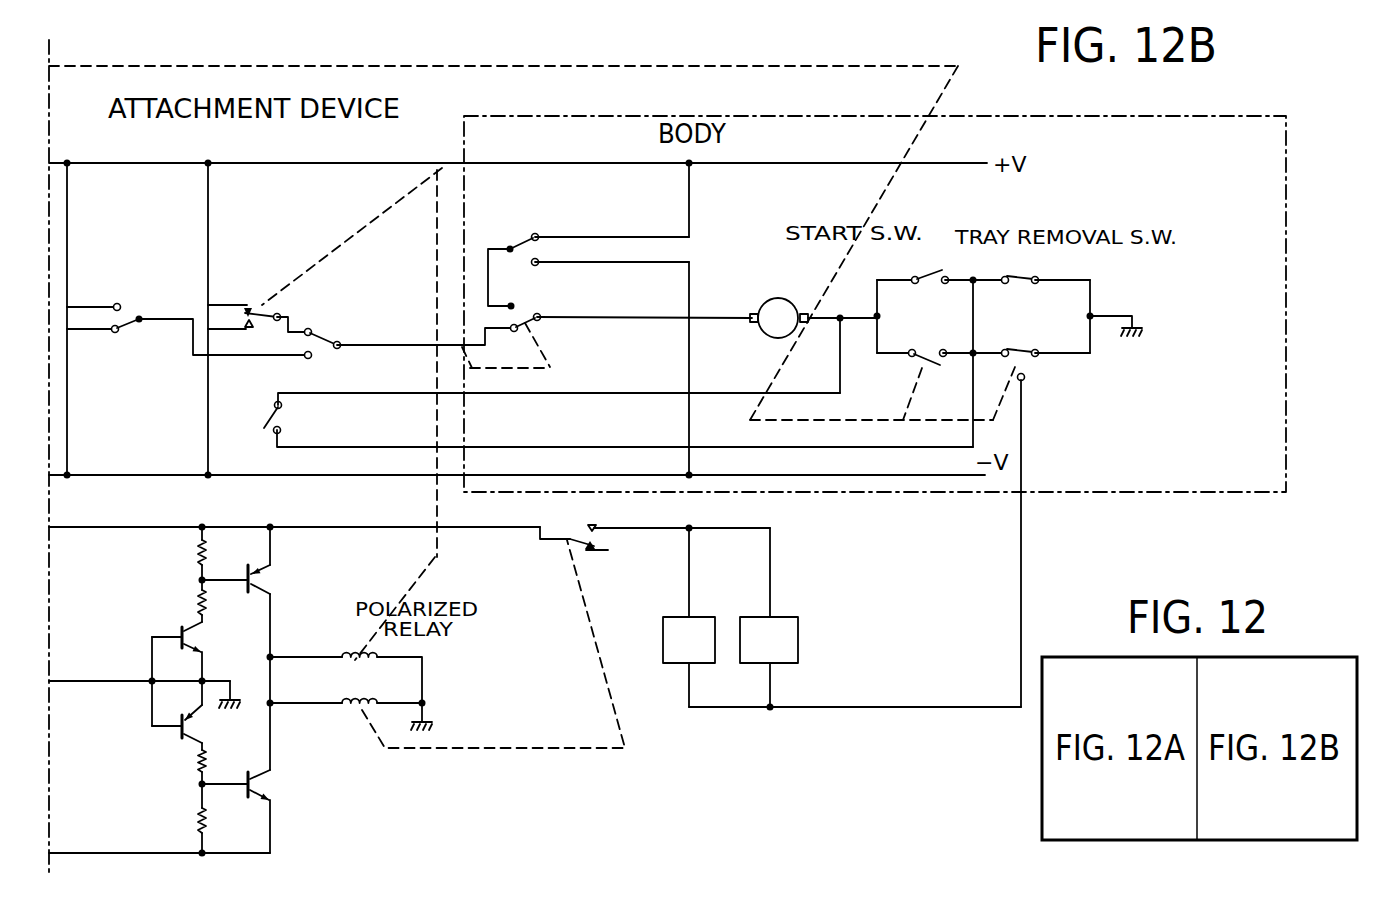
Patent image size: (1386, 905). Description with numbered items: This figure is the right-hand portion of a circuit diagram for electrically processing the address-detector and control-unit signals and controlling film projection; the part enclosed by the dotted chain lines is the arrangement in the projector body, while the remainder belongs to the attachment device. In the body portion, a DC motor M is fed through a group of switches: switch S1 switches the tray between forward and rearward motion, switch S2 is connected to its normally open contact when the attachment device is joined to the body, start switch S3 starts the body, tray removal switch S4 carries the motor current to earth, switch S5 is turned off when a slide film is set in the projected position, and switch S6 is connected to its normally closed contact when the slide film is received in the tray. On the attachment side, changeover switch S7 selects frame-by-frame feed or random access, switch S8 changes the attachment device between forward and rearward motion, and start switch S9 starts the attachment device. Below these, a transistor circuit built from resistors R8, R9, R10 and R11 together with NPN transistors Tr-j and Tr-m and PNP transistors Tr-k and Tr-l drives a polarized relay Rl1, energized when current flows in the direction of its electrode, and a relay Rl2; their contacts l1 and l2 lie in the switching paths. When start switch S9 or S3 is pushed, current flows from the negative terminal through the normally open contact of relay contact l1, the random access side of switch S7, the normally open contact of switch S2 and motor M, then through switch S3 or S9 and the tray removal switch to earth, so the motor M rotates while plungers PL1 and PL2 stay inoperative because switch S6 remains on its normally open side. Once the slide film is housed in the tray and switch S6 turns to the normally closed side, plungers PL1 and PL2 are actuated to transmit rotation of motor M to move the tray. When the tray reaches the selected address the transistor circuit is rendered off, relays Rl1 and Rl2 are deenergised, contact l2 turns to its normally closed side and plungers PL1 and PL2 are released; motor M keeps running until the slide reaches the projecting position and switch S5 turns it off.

The switch S1 is at (588, 319).
The switch S2 is at (607, 329).
The start switch S3 is at (925, 280).
The tray removal switch S4 is at (1031, 280).
The switch S5 is at (925, 364).
The switch S6 is at (1031, 518).
The changeover switch S7 is at (403, 324).
The switch S8 is at (189, 319).
The start switch S9 is at (612, 420).
The contact of polarized relay l1 is at (260, 300).
The contact of relay l2 is at (652, 538).
The DC motor M is at (815, 345).
The resistor R8 is at (187, 552).
The resistor R9 is at (187, 602).
The resistor R10 is at (183, 762).
The resistor R11 is at (183, 820).
The polarized relay Rl1 is at (346, 659).
The relay Rl2 is at (351, 717).
The NPN transistor Tr-j is at (200, 639).
The PNP transistor Tr-k is at (200, 730).
The PNP transistor Tr-l is at (268, 582).
The NPN transistor Tr-m is at (268, 786).
The plunger PL1 is at (689, 617).
The plunger PL2 is at (769, 617).